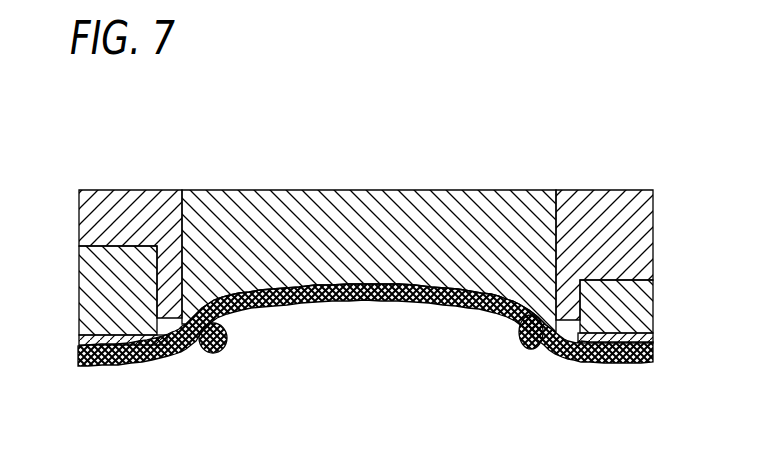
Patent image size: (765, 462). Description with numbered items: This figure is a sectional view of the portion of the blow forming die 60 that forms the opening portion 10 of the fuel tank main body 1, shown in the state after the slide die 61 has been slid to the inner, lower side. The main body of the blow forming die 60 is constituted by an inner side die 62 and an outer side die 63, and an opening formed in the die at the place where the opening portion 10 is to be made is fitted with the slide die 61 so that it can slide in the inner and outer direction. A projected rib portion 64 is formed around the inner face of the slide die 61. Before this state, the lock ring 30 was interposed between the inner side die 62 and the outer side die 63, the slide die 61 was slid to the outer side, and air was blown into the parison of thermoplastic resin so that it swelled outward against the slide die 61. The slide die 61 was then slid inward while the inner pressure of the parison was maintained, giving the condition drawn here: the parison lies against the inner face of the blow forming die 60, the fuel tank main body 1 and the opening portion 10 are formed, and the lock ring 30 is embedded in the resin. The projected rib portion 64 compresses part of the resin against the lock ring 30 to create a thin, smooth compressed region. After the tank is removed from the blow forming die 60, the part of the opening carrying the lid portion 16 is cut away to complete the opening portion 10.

The fuel tank main body 1 is at (627, 363).
The opening portion 10 is at (365, 280).
The lid portion 16 is at (300, 289).
The lock ring 30 is at (210, 353).
The blow forming die 60 is at (339, 224).
The slide die 61 is at (435, 213).
The inner side die 62 is at (103, 270).
The outer side die 63 is at (143, 217).
The projected rib portion 64 is at (548, 350).